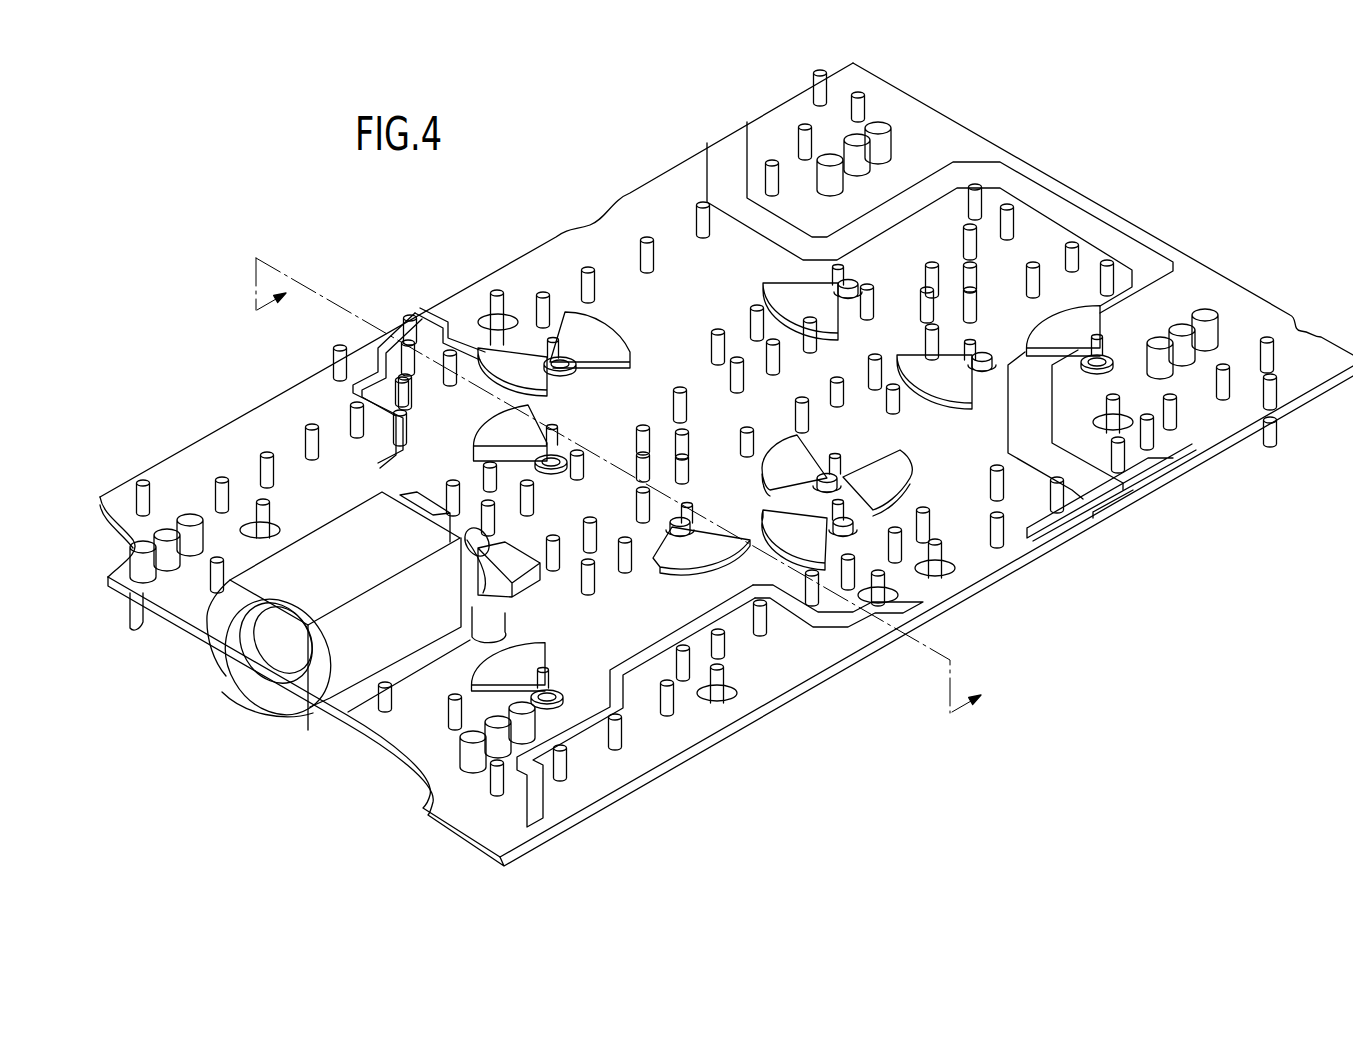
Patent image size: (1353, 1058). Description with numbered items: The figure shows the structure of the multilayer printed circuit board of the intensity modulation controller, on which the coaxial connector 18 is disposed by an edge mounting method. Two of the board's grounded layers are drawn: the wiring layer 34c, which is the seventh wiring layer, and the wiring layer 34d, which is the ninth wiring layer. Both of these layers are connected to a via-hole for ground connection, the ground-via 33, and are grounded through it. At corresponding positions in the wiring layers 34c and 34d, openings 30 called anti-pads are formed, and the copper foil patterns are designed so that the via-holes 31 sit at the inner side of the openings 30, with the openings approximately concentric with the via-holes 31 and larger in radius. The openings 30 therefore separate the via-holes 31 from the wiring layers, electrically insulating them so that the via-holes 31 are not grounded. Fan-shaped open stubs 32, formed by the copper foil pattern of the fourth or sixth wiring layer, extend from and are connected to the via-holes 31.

The coaxial connector 18 is at (246, 693).
The opening 30 is at (550, 470).
The via-hole 31 is at (558, 432).
The open stub 32 is at (505, 455).
The ground-via 33 is at (340, 350).
The wiring layer 34c is at (463, 818).
The wiring layer 34d is at (490, 846).